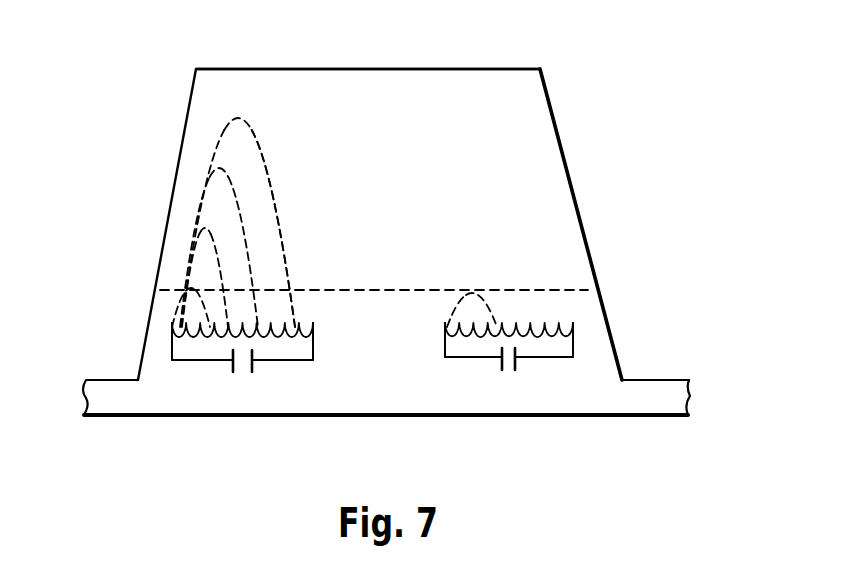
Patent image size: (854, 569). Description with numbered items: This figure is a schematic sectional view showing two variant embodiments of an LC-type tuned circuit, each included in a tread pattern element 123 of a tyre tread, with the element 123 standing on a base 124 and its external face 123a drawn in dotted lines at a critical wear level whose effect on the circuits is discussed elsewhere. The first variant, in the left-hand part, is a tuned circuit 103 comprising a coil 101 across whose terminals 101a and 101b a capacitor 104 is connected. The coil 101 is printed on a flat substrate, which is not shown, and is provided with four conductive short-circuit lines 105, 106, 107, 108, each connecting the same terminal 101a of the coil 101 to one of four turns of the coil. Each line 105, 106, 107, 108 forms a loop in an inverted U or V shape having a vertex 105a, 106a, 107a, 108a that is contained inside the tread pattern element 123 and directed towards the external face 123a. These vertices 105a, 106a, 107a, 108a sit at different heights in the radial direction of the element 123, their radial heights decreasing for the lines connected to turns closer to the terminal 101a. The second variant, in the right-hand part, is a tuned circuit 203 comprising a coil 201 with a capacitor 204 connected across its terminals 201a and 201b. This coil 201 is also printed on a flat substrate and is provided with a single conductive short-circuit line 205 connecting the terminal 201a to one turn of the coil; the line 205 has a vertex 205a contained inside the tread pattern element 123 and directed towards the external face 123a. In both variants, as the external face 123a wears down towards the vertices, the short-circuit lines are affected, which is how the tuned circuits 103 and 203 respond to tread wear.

The coil 101 is at (203, 334).
The terminal of the coil 101a is at (172, 325).
The terminal of the coil 101b is at (317, 327).
The tuned circuit 103 is at (262, 158).
The capacitor 104 is at (233, 362).
The conductive short-circuit line 105 is at (227, 308).
The vertex 105a is at (190, 286).
The conductive short-circuit line 106 is at (220, 260).
The vertex 106a is at (203, 228).
The conductive short-circuit line 107 is at (251, 267).
The vertex 107a is at (218, 166).
The conductive short-circuit line 108 is at (284, 248).
The vertex 108a is at (236, 117).
The tread pattern element 123 is at (562, 145).
The external face 123a is at (468, 68).
The base plate 124 is at (298, 418).
The coil 201 is at (465, 337).
The terminal of the coil 201a is at (444, 324).
The terminal of the coil 201b is at (573, 323).
The tuned circuit 203 is at (615, 348).
The capacitor 204 is at (517, 365).
The conductive short-circuit line 205 is at (497, 314).
The vertex 205a is at (474, 292).